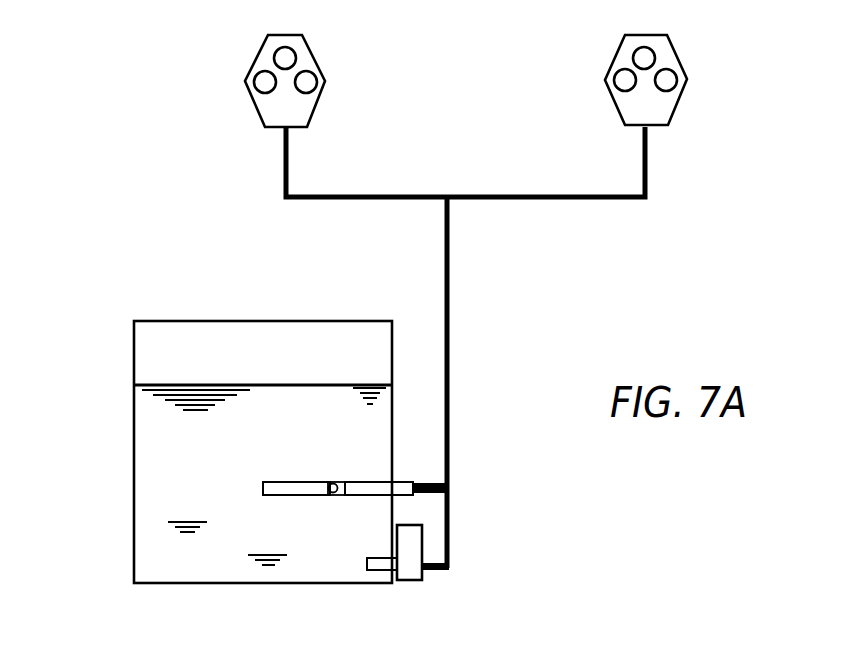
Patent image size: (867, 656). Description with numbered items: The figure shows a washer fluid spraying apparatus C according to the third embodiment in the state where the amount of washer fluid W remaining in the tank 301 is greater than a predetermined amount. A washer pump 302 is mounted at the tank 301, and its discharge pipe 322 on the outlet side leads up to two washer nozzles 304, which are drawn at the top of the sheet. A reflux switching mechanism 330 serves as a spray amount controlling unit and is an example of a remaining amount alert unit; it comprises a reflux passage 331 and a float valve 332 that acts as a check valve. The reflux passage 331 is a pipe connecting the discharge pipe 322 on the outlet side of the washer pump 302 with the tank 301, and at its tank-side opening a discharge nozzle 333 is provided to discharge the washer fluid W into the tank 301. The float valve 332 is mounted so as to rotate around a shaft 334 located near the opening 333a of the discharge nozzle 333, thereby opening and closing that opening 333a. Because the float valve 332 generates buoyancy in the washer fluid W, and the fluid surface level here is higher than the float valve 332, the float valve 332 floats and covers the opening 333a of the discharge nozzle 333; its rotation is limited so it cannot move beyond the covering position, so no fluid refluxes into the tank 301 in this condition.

The washer fluid spraying apparatus C is at (498, 33).
The washer nozzle 304 is at (325, 70).
The discharge pipe 322 is at (449, 517).
The tank 301 is at (133, 500).
The washer fluid W is at (163, 383).
The reflux switching mechanism 330 is at (416, 464).
The reflux passage 331 is at (430, 482).
The float valve 332 is at (277, 481).
The discharge nozzle 333 is at (367, 502).
The opening 333a is at (333, 481).
The shaft 334 is at (331, 494).
The washer pump 302 is at (422, 537).